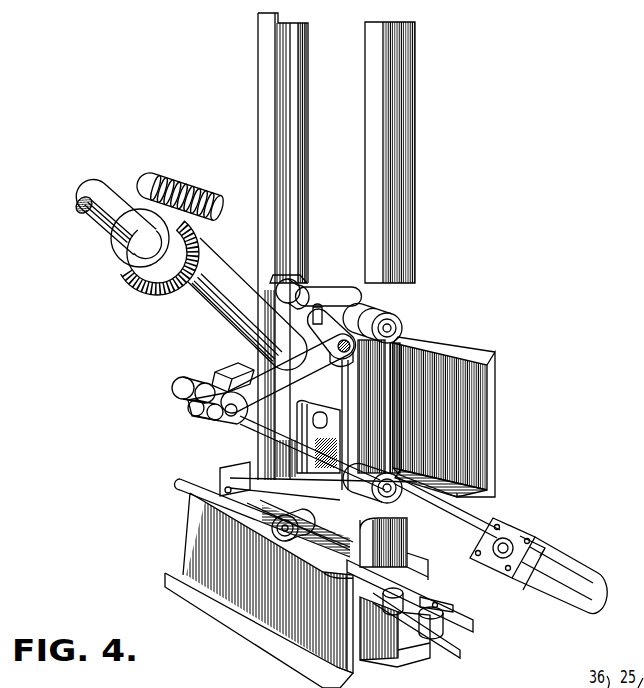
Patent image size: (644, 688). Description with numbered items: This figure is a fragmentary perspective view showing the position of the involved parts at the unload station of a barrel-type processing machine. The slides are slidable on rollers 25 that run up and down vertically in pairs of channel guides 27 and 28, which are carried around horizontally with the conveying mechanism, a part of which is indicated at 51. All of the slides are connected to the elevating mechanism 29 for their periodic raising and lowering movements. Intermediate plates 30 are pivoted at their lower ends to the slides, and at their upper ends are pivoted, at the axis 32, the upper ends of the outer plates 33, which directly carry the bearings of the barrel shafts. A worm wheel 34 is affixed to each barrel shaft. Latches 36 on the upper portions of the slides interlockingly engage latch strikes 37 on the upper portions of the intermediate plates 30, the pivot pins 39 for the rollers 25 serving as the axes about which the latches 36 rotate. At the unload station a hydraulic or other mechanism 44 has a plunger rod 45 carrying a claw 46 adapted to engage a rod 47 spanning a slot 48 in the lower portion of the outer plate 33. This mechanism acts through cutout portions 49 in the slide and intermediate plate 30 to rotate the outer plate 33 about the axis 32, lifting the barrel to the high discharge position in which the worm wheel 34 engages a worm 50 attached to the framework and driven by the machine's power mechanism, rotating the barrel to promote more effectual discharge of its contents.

The rollers 25 is at (370, 307).
The channel guides 27 is at (272, 73).
The channel guides 28 is at (405, 77).
The elevating mechanism 29 is at (480, 400).
The intermediate plates 30 is at (300, 367).
The pivot 32 is at (341, 358).
The outer plates 33 is at (228, 362).
The worm wheels 34 is at (133, 290).
The latches 36 is at (325, 296).
The latch strikes 37 is at (308, 330).
The pivot pins 39 is at (398, 325).
The hydraulic mechanism 44 is at (577, 583).
The plunger rod 45 is at (455, 520).
The claw 46 is at (205, 418).
The rod 47 is at (183, 400).
The slot 48 is at (246, 375).
The cutout portions 49 is at (325, 420).
The worm 50 is at (157, 176).
The horizontal conveying mechanism 51 is at (445, 615).